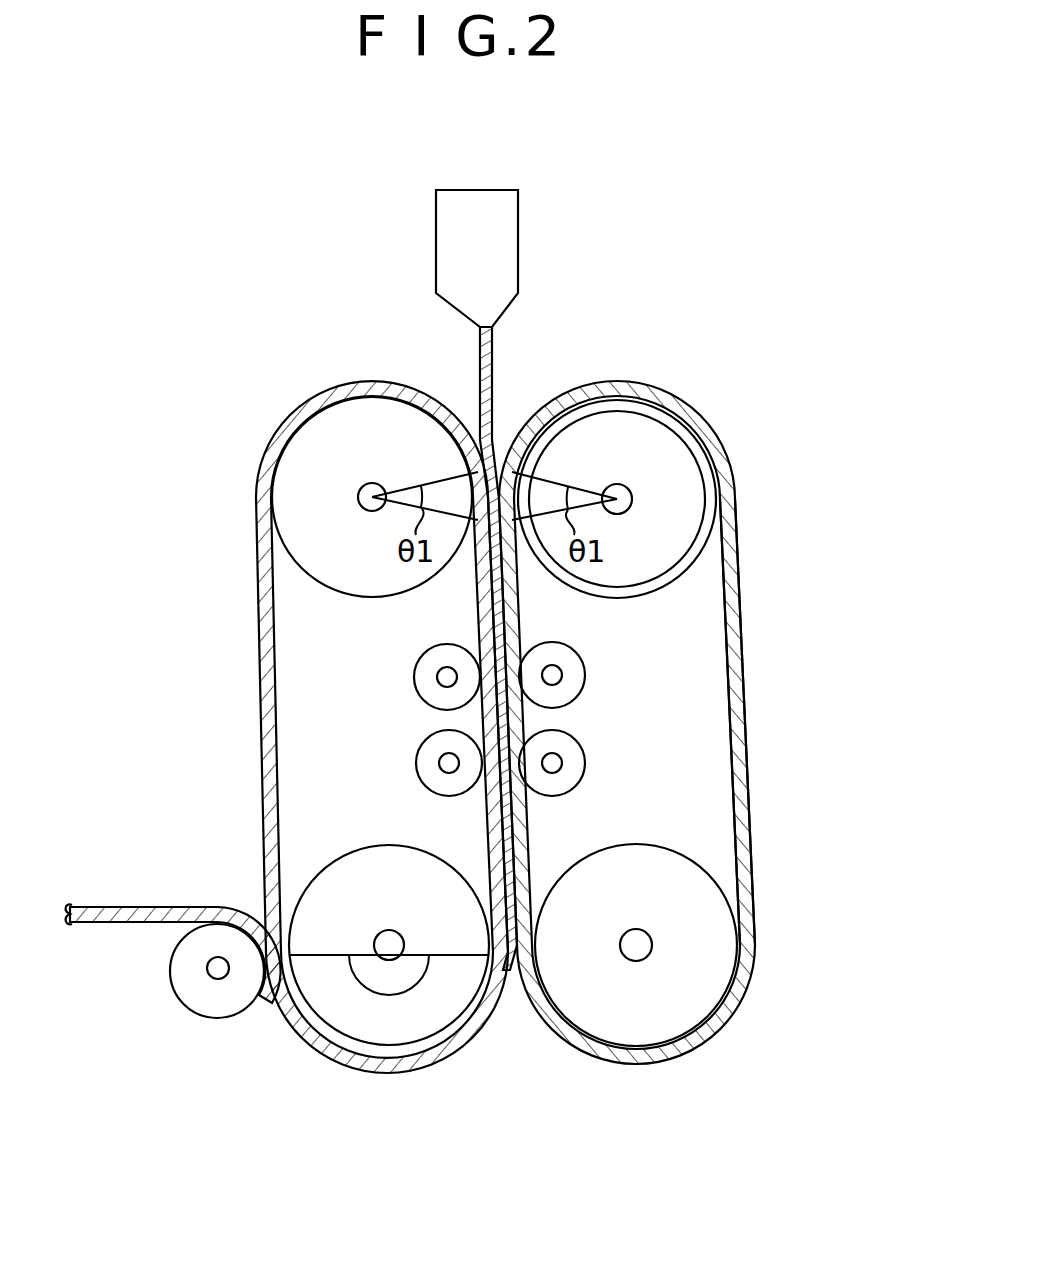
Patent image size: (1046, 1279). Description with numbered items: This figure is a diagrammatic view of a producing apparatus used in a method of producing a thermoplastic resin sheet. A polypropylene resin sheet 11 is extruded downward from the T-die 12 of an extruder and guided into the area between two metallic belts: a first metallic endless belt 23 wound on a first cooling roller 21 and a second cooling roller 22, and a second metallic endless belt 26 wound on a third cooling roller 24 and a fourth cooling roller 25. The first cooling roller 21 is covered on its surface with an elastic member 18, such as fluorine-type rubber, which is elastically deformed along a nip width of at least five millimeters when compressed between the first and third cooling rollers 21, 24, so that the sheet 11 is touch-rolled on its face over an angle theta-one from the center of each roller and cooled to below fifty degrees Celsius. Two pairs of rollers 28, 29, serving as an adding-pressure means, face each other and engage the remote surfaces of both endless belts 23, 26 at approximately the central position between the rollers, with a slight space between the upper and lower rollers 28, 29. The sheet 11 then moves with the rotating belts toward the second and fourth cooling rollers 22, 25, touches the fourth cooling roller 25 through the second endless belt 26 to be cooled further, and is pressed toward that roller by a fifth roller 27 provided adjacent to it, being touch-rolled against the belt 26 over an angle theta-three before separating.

The polypropylene resin sheet 11 is at (497, 372).
The T-die 12 is at (505, 248).
The elastic member 18 is at (645, 405).
The first cooling roller 21 is at (672, 445).
The second cooling roller 22 is at (715, 950).
The first metallic endless belt 23 is at (742, 670).
The third cooling roller 24 is at (290, 462).
The fourth cooling roller 25 is at (350, 1010).
The second metallic endless belt 26 is at (265, 670).
The fifth roller 27 is at (205, 997).
The rollers 28 is at (620, 677).
The rollers 29 is at (620, 765).